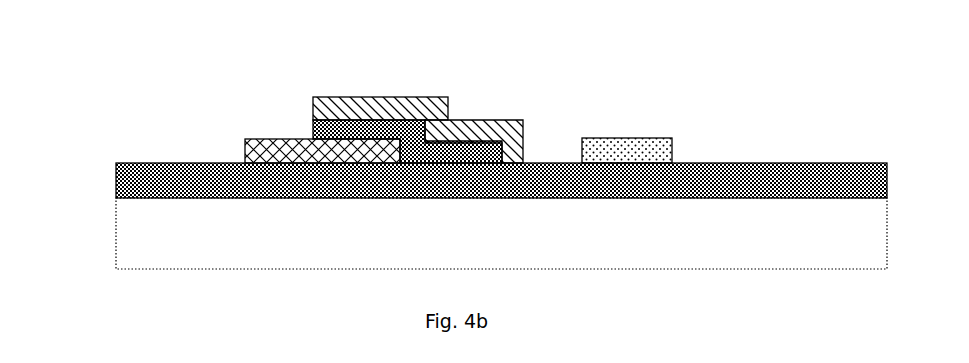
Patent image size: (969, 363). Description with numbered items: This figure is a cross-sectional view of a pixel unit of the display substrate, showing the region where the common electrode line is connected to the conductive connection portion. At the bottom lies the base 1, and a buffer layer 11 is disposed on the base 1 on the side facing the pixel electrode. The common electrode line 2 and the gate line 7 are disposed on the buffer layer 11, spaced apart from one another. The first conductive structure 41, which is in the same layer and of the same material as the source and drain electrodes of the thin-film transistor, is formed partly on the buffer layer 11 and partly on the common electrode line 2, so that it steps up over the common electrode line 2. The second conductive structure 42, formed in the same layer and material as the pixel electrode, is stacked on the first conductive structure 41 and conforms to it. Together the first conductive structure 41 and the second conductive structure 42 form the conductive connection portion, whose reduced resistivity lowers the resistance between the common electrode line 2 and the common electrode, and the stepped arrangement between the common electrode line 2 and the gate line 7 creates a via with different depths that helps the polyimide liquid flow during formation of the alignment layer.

The base 1 is at (157, 244).
The buffer layer 11 is at (155, 183).
The common electrode line 2 is at (283, 140).
The first conductive structure 41 is at (332, 120).
The second conductive structure 42 is at (467, 135).
The gate line 7 is at (625, 145).